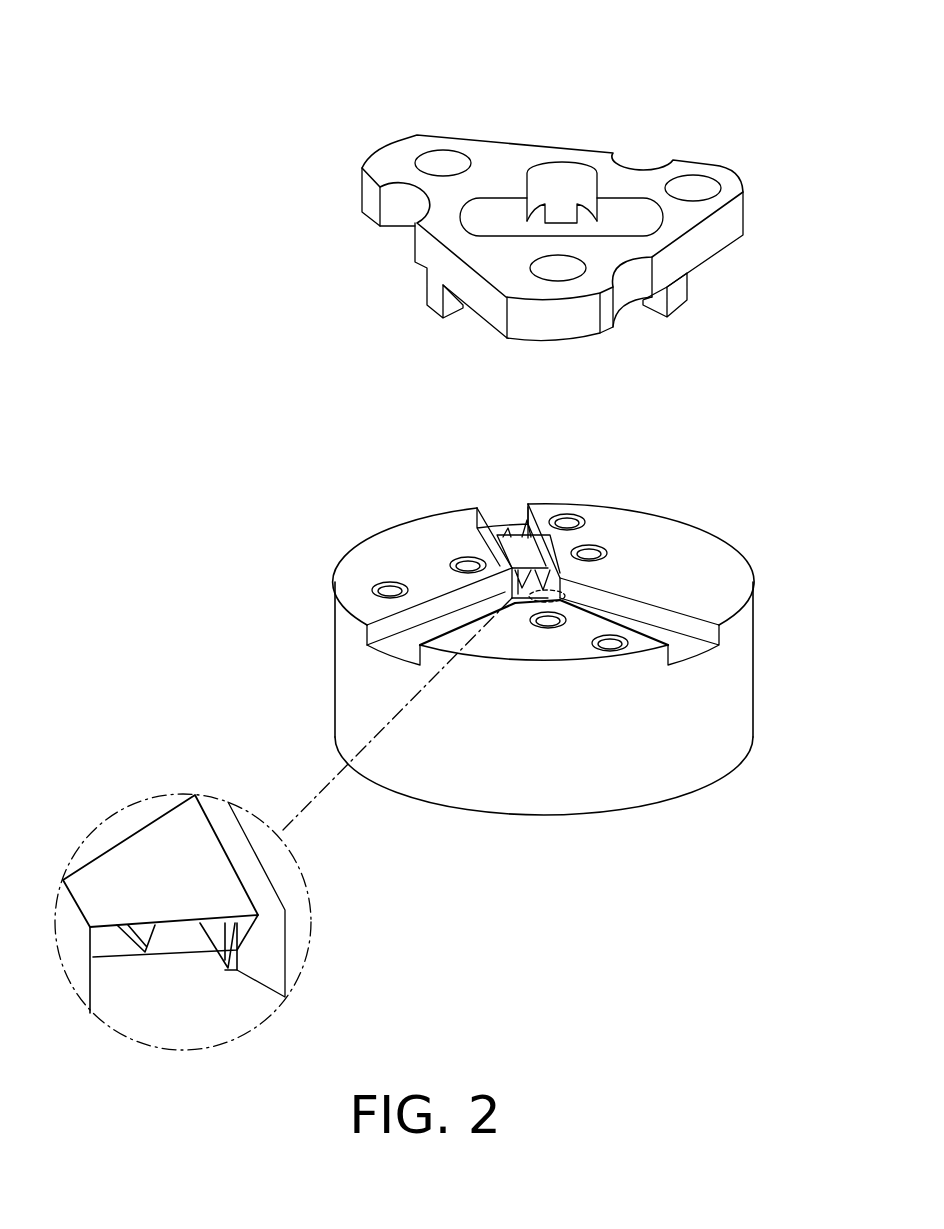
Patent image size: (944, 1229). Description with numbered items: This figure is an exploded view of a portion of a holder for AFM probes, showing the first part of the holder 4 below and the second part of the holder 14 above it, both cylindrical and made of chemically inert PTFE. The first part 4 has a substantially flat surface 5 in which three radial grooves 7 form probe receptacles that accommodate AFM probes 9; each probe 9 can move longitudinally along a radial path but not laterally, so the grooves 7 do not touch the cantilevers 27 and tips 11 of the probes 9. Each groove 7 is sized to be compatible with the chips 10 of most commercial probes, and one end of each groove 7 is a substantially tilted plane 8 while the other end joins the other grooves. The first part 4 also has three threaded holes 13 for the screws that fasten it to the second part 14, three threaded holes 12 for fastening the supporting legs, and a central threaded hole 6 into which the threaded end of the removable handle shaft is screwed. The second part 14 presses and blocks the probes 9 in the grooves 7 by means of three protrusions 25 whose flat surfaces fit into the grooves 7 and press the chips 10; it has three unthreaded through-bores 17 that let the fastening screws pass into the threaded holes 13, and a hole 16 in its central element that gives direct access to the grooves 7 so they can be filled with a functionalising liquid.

The first part of the holder 4 is at (400, 492).
The flat surface 5 is at (388, 548).
The threaded hole 6 is at (566, 598).
The groove 7 is at (420, 640).
The tilted plane 8 is at (367, 648).
The AFM probe 9 is at (560, 536).
The chip 10 is at (529, 512).
The tip 11 is at (237, 972).
The threaded hole 12 is at (613, 653).
The threaded hole 13 is at (612, 553).
The second part of the holder 14 is at (340, 139).
The hole 16 is at (536, 200).
The unthreaded through-bore 17 is at (694, 187).
The protrusion 25 is at (677, 295).
The cantilever 27 is at (505, 532).